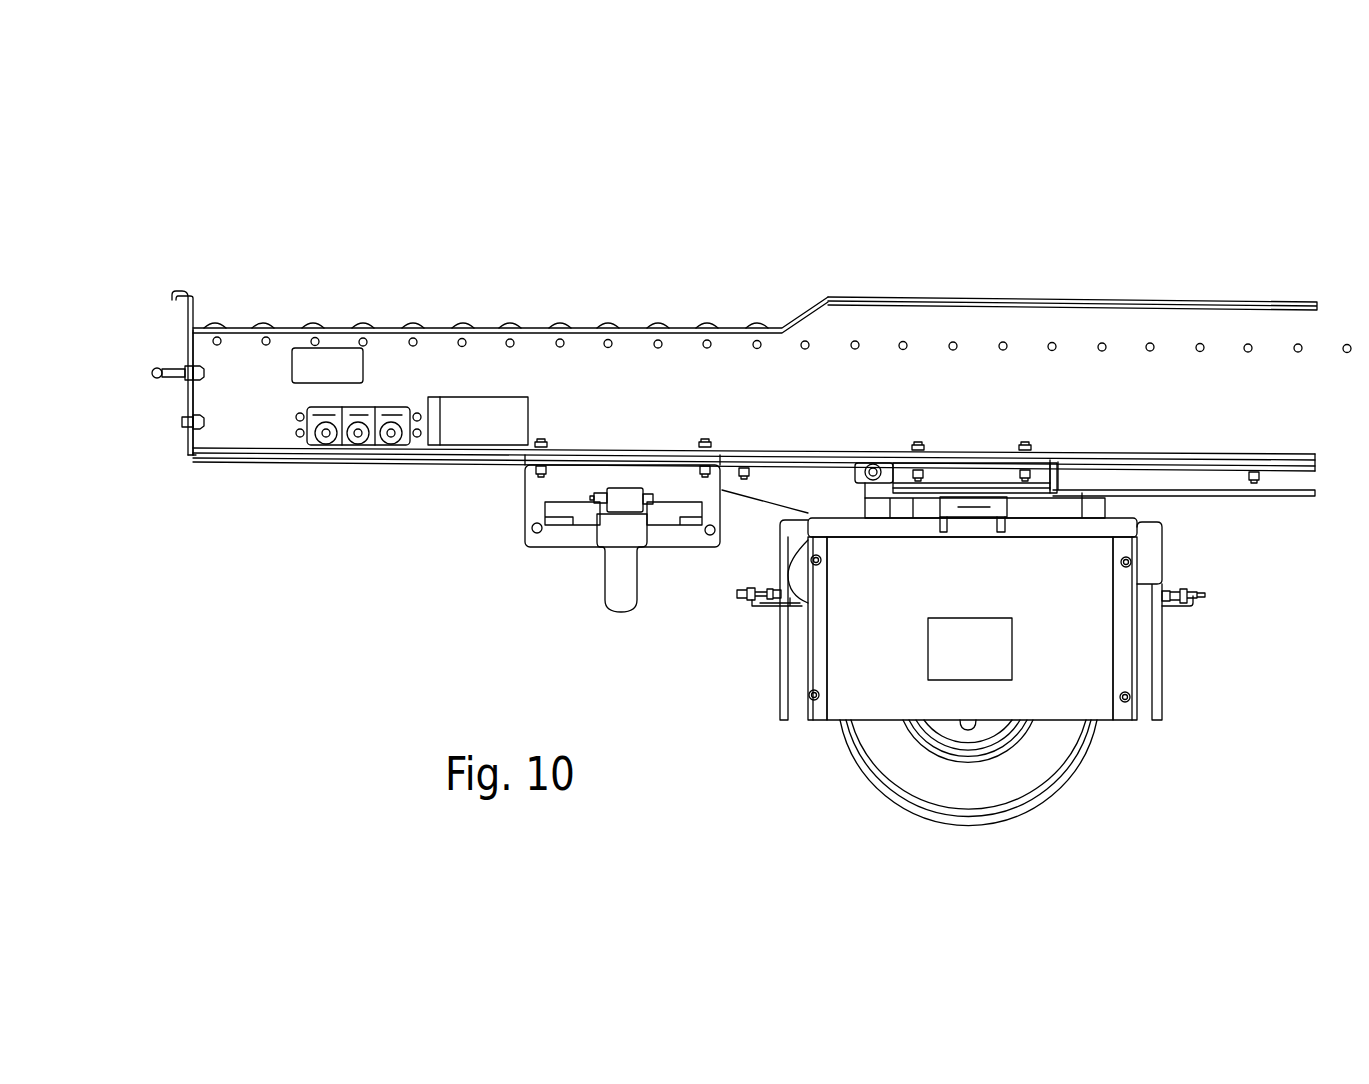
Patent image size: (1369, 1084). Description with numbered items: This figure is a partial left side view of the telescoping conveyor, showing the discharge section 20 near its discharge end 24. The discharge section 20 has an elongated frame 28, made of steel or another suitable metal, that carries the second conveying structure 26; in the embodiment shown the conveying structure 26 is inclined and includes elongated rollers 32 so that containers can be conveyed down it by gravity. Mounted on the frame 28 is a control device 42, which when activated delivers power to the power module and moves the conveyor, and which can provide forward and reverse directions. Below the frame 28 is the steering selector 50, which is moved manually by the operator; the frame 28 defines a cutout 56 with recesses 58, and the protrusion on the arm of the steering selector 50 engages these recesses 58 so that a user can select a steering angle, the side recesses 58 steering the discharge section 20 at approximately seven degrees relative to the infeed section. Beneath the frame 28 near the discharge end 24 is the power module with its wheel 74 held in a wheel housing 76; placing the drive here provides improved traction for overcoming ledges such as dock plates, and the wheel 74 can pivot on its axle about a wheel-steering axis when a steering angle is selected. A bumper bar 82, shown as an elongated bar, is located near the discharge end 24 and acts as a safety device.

The discharge section 20 is at (964, 297).
The discharge end 24 is at (188, 352).
The second conveying structure 26 is at (1143, 272).
The frame 28 is at (677, 365).
The elongated rollers 32 is at (510, 325).
The control device 42 is at (338, 445).
The steering selector 50 is at (612, 609).
The cutout 56 is at (545, 505).
The recesses 58 is at (570, 527).
The wheel 74 is at (872, 782).
The wheel housing 76 is at (780, 697).
The bumper bar 82 is at (152, 380).